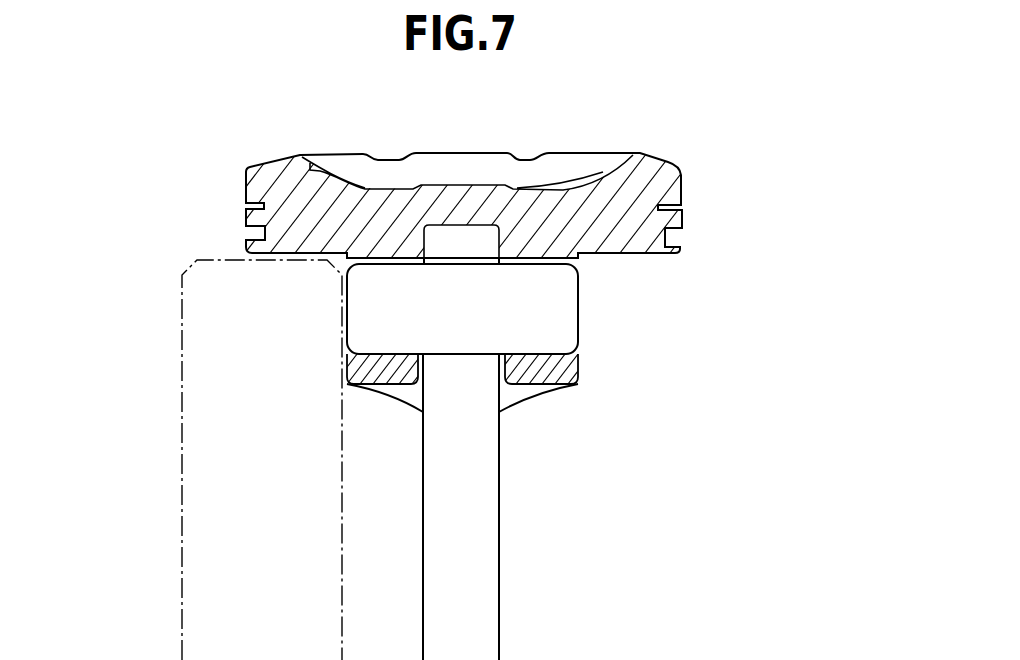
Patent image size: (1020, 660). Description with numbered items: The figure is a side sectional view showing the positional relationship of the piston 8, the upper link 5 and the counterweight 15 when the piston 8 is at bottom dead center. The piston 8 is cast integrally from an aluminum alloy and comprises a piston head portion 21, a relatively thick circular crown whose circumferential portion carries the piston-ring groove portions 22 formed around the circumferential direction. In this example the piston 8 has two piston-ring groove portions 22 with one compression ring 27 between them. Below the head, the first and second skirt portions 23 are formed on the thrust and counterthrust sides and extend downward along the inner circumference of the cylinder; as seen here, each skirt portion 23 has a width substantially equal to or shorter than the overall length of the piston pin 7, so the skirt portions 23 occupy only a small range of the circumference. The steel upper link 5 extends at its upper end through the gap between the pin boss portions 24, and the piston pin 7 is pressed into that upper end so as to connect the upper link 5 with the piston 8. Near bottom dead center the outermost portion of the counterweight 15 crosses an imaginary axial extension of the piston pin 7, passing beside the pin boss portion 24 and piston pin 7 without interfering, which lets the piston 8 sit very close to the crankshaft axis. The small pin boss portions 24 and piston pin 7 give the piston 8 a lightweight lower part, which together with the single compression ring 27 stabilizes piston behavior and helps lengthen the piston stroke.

The upper link 5 is at (483, 510).
The piston pin 7 is at (579, 288).
The piston 8 is at (680, 160).
The counterweight 15 is at (183, 478).
The piston head portion 21 is at (598, 192).
The piston-ring groove portions 22 is at (673, 239).
The skirt portions 23 is at (410, 402).
The pin boss portions 24 is at (403, 386).
The compression ring 27 is at (250, 219).